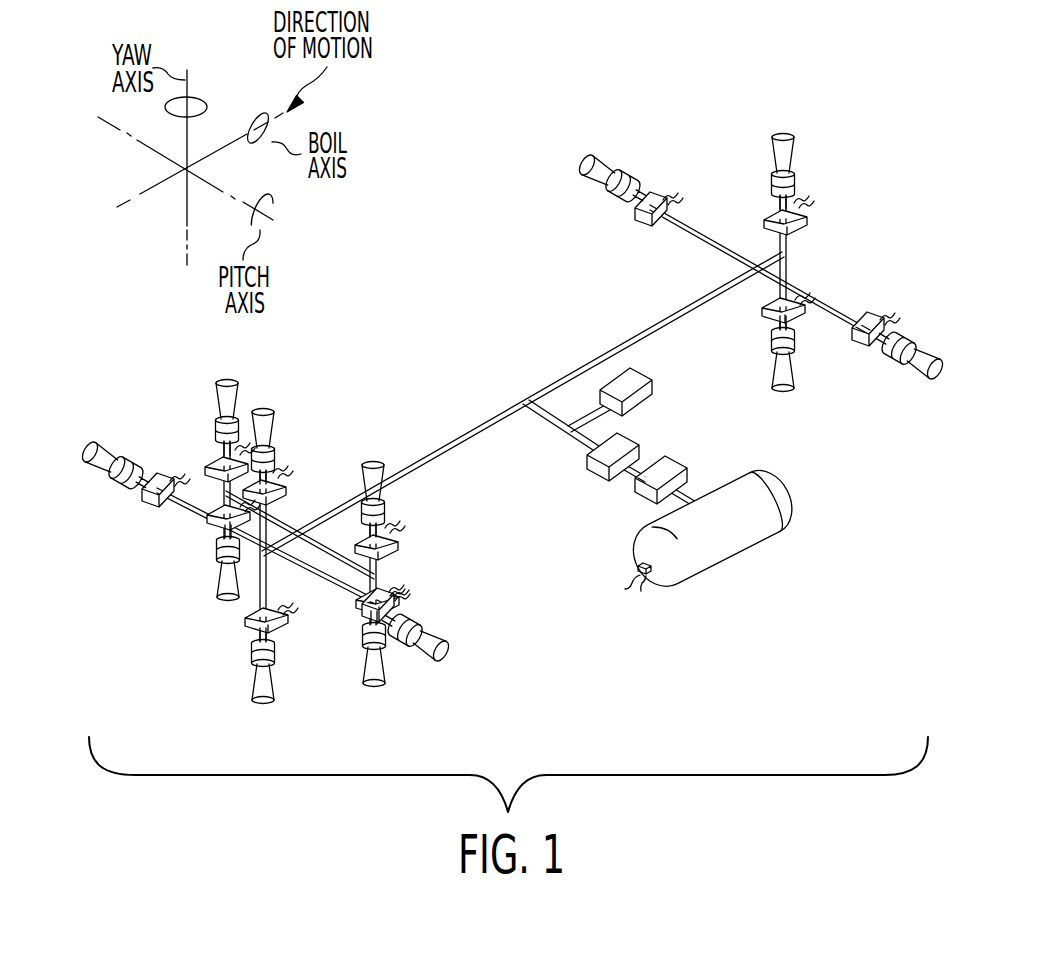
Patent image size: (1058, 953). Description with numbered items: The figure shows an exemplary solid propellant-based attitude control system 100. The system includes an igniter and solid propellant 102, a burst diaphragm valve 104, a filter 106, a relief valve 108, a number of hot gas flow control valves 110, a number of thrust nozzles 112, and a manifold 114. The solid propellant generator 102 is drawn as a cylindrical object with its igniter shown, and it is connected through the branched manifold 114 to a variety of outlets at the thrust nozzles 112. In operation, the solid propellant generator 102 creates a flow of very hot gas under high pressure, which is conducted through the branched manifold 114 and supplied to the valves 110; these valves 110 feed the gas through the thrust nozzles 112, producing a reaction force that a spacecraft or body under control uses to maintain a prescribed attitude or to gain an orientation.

The solid propellant-based attitude control system 100 is at (620, 686).
The igniter and solid propellant 102 is at (720, 550).
The burst diaphragm valve 104 is at (670, 470).
The filter 106 is at (598, 467).
The relief valve 108 is at (633, 381).
The hot gas flow control valve 110 is at (656, 188).
The thrust nozzle 112 is at (608, 197).
The manifold 114 is at (450, 442).